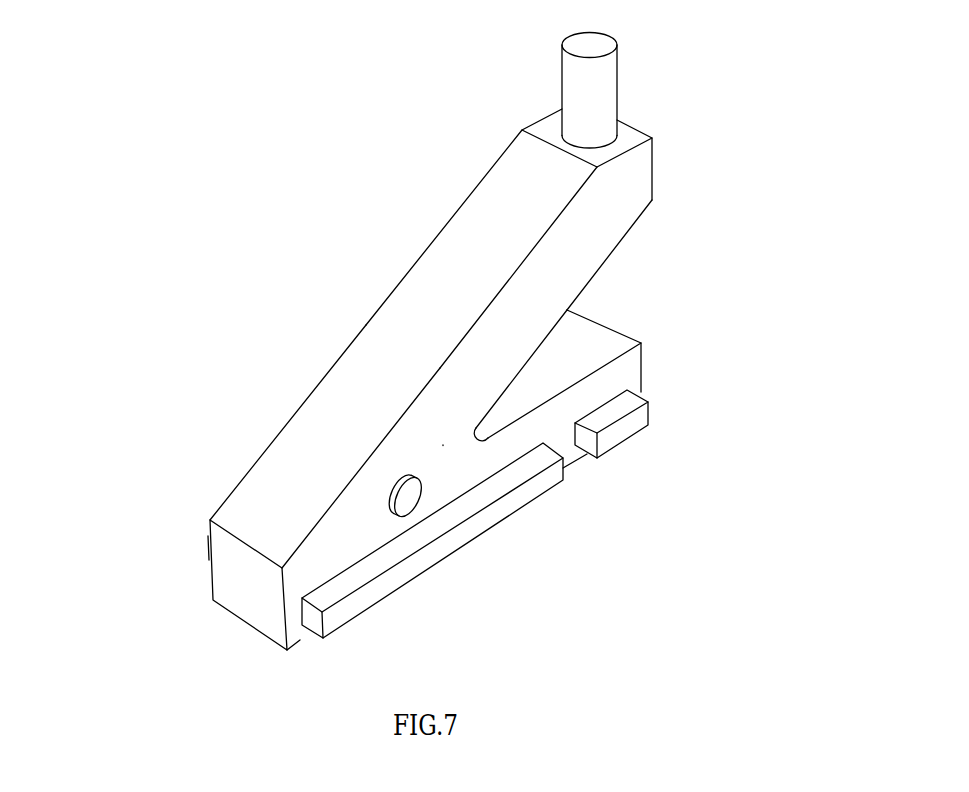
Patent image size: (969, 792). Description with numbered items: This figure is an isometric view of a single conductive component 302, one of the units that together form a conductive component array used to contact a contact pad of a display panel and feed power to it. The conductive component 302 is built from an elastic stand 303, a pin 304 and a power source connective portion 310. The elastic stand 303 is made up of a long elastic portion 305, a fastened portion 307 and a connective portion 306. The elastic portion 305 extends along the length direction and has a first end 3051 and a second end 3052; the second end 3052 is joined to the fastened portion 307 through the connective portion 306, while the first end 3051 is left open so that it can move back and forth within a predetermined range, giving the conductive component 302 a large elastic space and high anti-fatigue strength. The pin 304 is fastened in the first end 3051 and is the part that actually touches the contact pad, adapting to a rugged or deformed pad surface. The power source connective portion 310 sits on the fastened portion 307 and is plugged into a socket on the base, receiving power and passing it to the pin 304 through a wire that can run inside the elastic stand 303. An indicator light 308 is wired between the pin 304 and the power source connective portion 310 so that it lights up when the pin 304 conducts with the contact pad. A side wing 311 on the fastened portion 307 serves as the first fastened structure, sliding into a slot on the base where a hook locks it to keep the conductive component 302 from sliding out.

The conductive component 302 is at (376, 339).
The elastic stand 303 is at (443, 445).
The pin 304 is at (590, 90).
The elastic portion 305 is at (440, 290).
The first end 3051 is at (548, 163).
The second end 3052 is at (358, 395).
The connective portion 306 is at (253, 535).
The fastened portion 307 is at (608, 337).
The indicator light 308 is at (405, 500).
The power source connective portion 310 is at (622, 425).
The side wing 311 is at (542, 487).